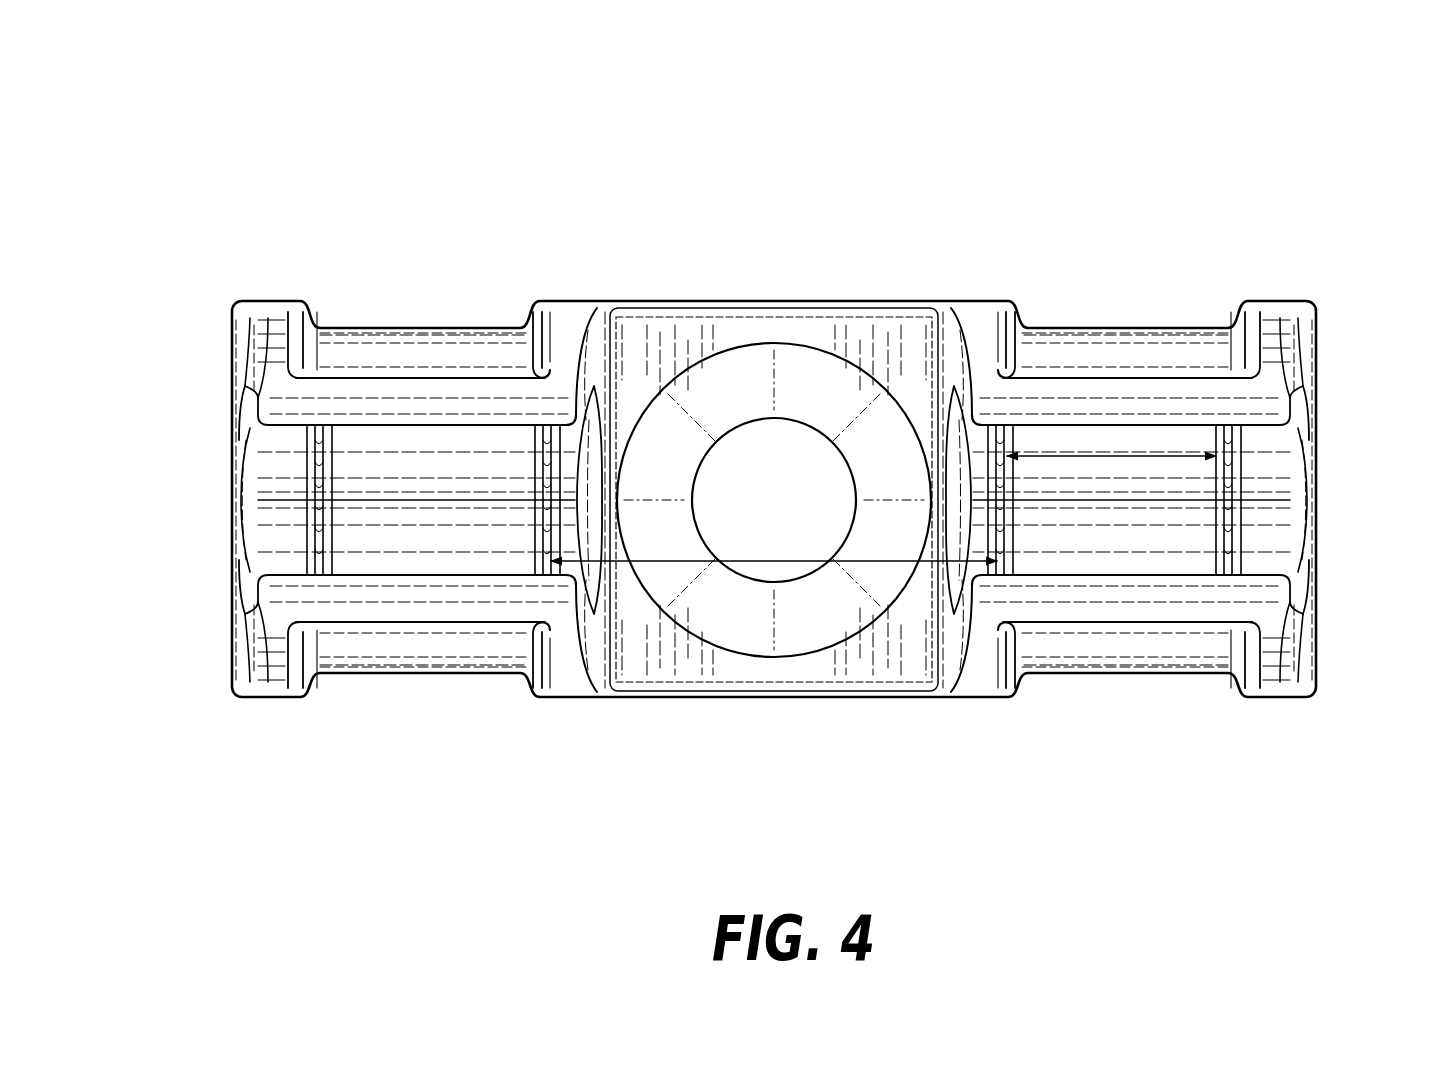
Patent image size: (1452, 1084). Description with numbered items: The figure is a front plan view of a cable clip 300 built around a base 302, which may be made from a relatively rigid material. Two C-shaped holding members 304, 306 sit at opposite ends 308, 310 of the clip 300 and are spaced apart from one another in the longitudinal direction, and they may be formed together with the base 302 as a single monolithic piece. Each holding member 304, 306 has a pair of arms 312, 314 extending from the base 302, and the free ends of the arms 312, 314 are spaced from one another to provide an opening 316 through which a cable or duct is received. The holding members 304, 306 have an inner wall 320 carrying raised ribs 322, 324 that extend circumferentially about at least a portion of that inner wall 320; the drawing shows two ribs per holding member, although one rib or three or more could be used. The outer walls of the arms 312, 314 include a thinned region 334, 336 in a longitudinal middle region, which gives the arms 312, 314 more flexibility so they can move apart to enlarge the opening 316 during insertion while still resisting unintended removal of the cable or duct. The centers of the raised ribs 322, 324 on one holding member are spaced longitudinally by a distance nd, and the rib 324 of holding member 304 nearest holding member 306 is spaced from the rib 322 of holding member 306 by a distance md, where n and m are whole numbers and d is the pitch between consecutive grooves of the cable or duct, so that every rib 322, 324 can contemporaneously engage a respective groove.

The cable clip 300 is at (907, 89).
The base 302 is at (866, 306).
The holding member 304 is at (272, 322).
The holding member 306 is at (1272, 310).
The end 308 is at (166, 352).
The end 310 is at (1372, 644).
The arm 312 is at (420, 356).
The arm 314 is at (432, 592).
The opening 316 is at (206, 518).
The inner wall 320 is at (580, 460).
The raised rib 322 is at (337, 568).
The raised rib 324 is at (547, 538).
The thinned region 334 is at (350, 324).
The thinned region 336 is at (350, 677).
The distance md is at (788, 572).
The distance nd is at (1112, 456).